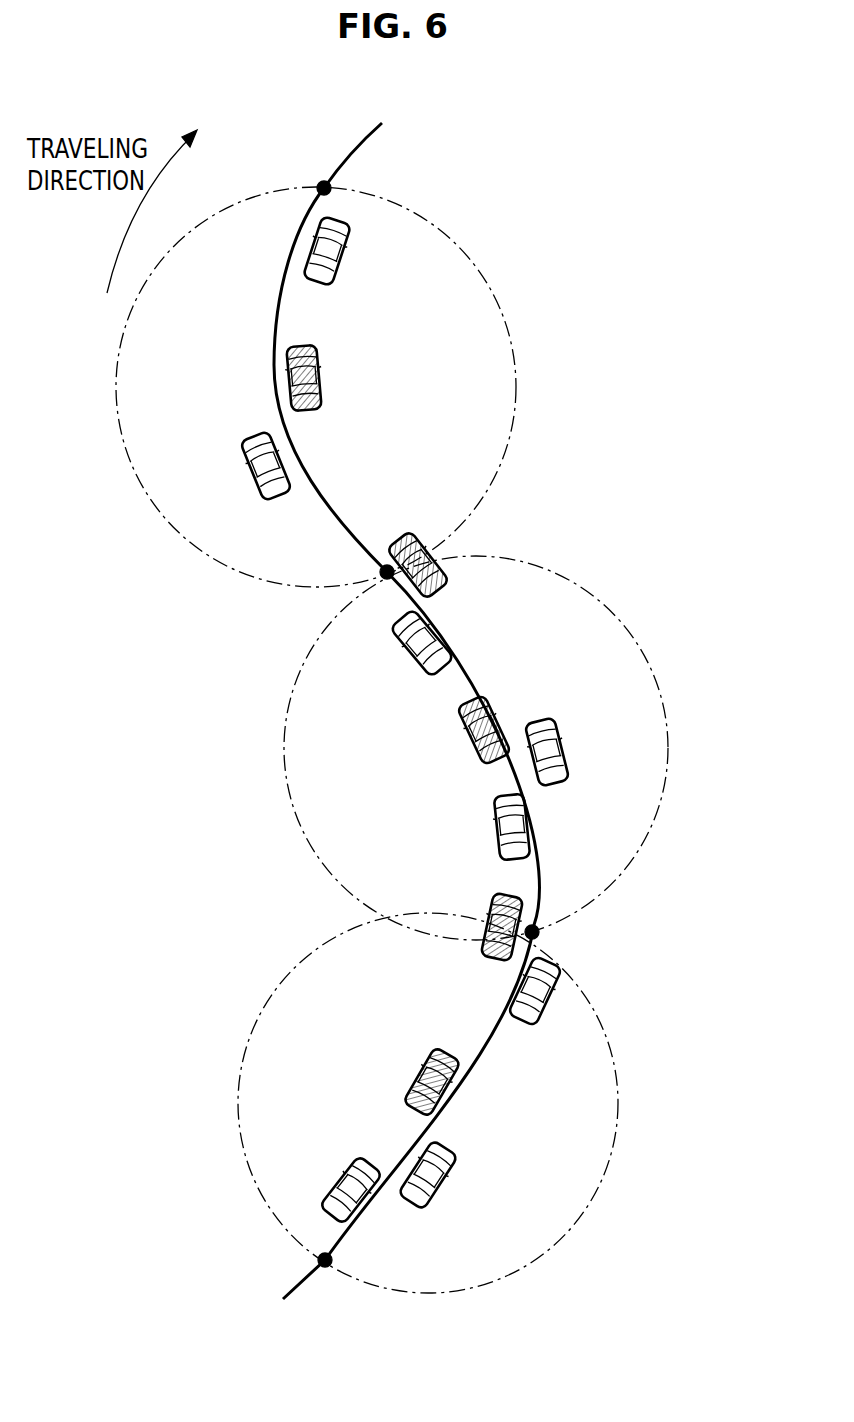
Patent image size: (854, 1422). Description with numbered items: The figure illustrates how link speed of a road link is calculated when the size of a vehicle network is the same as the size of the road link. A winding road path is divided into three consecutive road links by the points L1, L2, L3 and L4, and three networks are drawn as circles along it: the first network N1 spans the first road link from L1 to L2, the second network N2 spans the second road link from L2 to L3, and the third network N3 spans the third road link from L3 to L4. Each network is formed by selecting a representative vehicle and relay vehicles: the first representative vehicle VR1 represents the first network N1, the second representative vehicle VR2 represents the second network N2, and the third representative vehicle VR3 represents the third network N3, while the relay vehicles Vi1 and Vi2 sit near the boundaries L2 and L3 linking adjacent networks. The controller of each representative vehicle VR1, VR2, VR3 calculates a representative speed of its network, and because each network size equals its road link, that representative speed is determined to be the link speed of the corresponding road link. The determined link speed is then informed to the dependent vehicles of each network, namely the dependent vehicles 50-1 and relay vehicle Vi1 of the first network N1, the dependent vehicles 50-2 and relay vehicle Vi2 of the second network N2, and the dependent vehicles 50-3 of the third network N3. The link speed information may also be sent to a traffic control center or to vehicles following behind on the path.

The dependent vehicles 50-1 is at (367, 1208).
The dependent vehicles 50-2 is at (428, 643).
The dependent vehicles 50-3 is at (275, 470).
The first network N1 is at (238, 1104).
The second network N2 is at (287, 760).
The third network N3 is at (117, 418).
The road link boundary point L1 is at (333, 1276).
The road link boundary point L2 is at (550, 939).
The road link boundary point L3 is at (368, 569).
The road link boundary point L4 is at (316, 172).
The first representative vehicle VR1 is at (407, 1097).
The second representative vehicle VR2 is at (460, 712).
The third representative vehicle VR3 is at (322, 402).
The relay vehicle Vi1 is at (482, 950).
The relay vehicle Vi2 is at (445, 585).